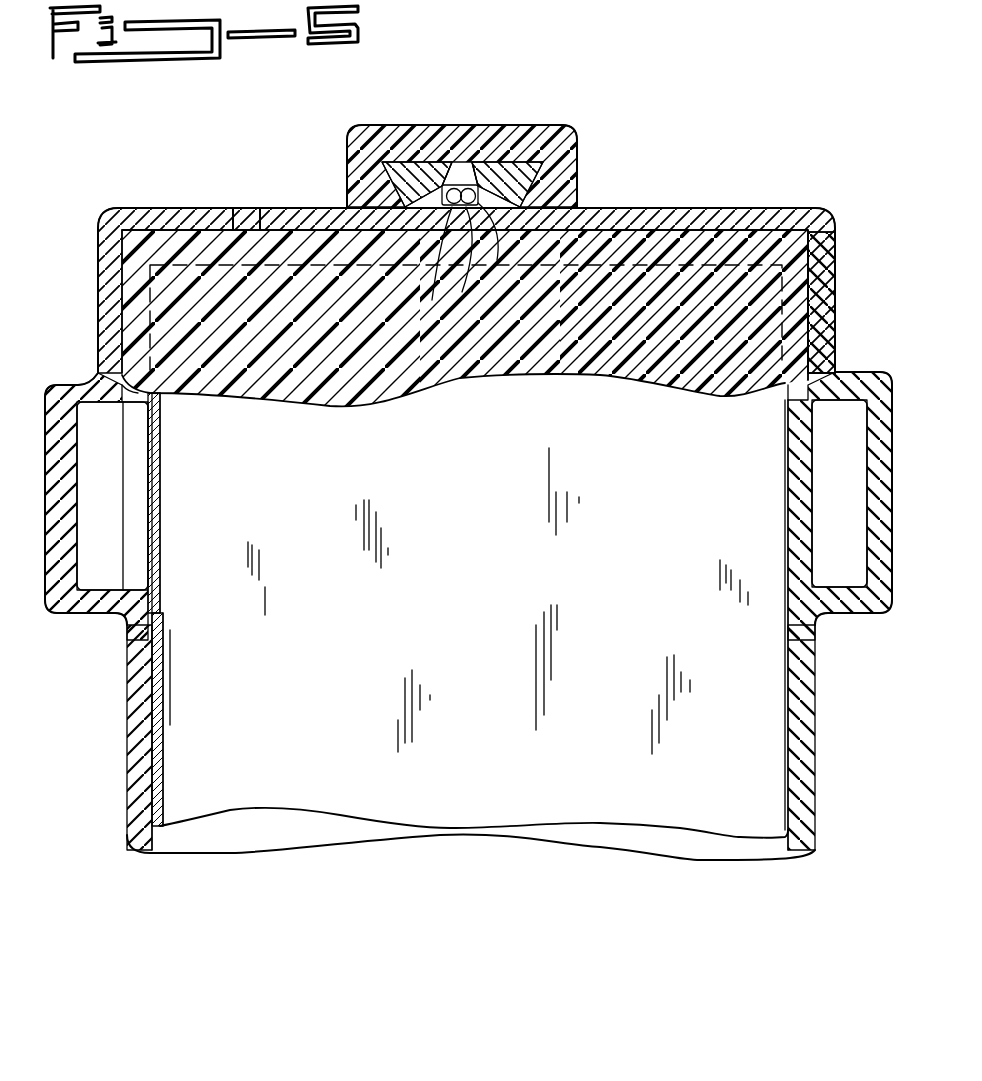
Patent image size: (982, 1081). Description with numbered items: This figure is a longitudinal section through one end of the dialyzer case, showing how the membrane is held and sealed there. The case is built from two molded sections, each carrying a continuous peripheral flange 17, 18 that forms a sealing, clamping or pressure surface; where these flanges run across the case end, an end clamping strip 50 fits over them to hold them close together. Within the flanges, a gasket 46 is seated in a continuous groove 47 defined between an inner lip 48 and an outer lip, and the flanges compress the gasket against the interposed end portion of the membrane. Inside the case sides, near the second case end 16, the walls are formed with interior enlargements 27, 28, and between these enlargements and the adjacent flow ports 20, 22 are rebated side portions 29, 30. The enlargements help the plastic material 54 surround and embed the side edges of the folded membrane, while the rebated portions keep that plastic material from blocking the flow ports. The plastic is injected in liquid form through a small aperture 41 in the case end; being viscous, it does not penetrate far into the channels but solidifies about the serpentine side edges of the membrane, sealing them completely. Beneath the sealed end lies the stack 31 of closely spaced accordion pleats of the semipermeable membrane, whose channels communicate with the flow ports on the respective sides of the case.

The second case end 16 is at (752, 226).
The peripheral flange 17 is at (392, 176).
The peripheral flange 18 is at (530, 172).
The flow port 20 is at (785, 497).
The flow port 22 is at (100, 500).
The interior enlargement 27 is at (110, 318).
The interior enlargement 28 is at (820, 298).
The rebated side portion 29 is at (138, 395).
The rebated side portion 30 is at (792, 396).
The stack 31 is at (505, 542).
The aperture 41 is at (240, 217).
The gasket 46 is at (463, 190).
The groove 47 is at (482, 216).
The inner lip 48 is at (445, 262).
The end clamping strip 50 is at (405, 128).
The plastic material 54 is at (442, 376).